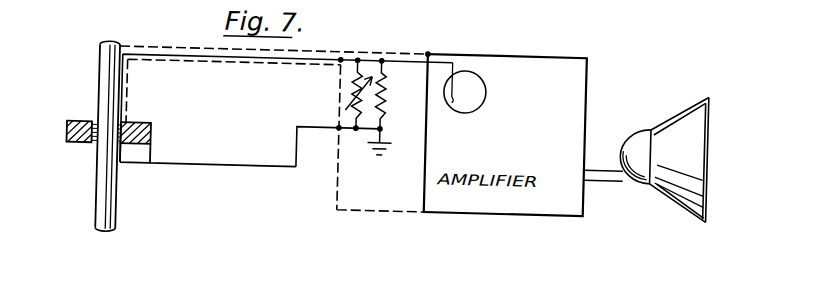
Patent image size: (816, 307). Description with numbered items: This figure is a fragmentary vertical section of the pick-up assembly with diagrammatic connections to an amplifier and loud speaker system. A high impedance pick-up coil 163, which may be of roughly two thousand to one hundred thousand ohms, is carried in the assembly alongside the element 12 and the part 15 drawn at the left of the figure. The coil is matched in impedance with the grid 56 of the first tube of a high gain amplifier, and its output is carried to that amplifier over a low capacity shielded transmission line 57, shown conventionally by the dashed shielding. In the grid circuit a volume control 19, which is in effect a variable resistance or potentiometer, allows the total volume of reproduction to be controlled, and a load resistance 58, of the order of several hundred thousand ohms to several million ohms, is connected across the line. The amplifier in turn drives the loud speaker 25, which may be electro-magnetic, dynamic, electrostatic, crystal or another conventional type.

The rod / shaft 12 is at (107, 85).
The clamp block 15 is at (69, 132).
The high impedance pick-up coil 163 is at (96, 146).
The low capacity shielded transmission line 57 is at (254, 54).
The volume control 19 is at (354, 89).
The load resistance 58 is at (386, 107).
The grid 56 is at (453, 101).
The loud speaker 25 is at (695, 142).